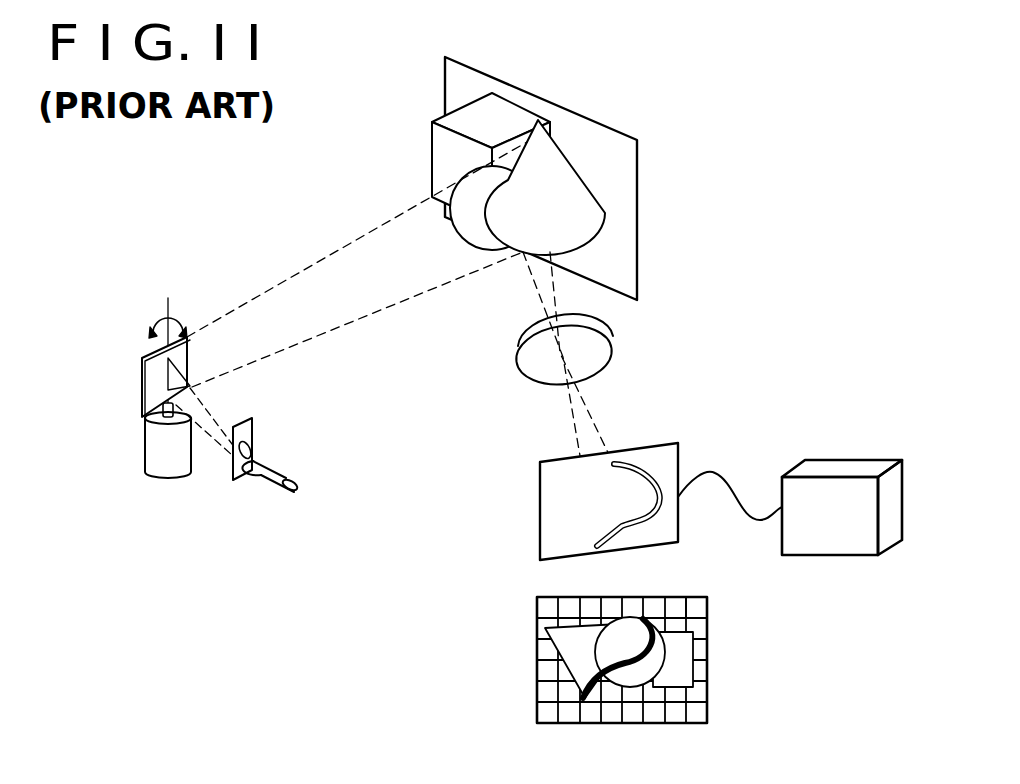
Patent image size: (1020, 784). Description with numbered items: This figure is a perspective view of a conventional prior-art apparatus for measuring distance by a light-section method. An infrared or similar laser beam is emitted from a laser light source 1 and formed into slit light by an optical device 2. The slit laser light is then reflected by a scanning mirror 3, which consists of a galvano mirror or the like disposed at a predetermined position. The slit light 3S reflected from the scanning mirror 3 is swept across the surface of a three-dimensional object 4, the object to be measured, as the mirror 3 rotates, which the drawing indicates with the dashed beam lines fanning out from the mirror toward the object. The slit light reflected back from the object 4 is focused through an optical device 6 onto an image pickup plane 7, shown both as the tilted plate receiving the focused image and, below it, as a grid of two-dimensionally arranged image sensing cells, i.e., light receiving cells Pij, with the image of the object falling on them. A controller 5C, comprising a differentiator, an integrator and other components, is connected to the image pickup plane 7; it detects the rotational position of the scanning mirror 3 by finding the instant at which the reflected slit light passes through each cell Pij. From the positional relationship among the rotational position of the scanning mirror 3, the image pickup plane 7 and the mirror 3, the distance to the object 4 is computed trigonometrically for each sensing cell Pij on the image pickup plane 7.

The laser light source 1 is at (270, 492).
The optical device 2 is at (233, 470).
The scanning mirror 3 is at (142, 390).
The slit light 3S is at (302, 275).
The three-dimensional object 4 is at (432, 167).
The optical device 6 is at (610, 338).
The image pickup plane 7 is at (538, 520).
The controller 5C is at (840, 458).
The light receiving cell Pij is at (707, 603).